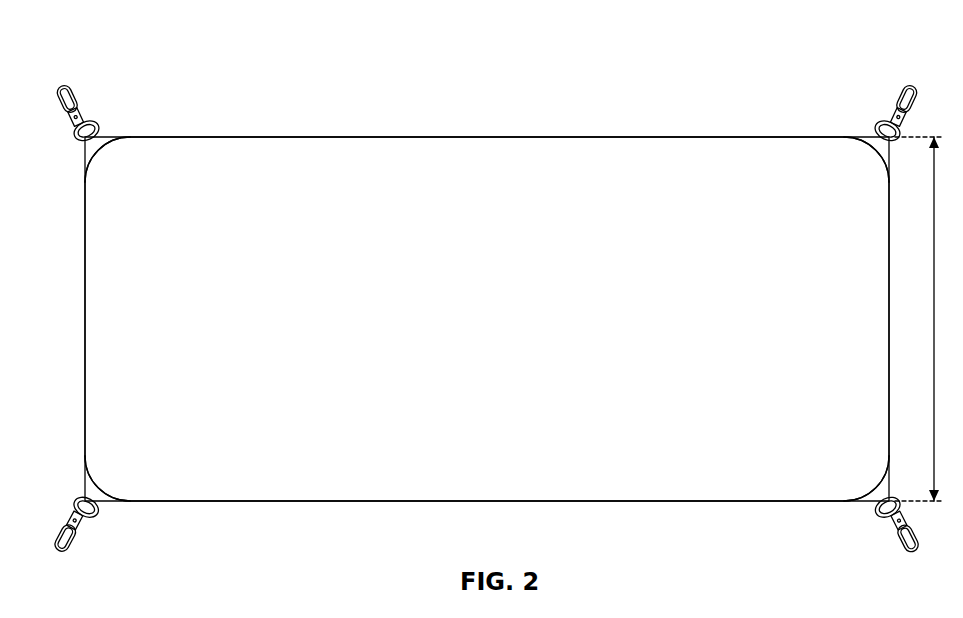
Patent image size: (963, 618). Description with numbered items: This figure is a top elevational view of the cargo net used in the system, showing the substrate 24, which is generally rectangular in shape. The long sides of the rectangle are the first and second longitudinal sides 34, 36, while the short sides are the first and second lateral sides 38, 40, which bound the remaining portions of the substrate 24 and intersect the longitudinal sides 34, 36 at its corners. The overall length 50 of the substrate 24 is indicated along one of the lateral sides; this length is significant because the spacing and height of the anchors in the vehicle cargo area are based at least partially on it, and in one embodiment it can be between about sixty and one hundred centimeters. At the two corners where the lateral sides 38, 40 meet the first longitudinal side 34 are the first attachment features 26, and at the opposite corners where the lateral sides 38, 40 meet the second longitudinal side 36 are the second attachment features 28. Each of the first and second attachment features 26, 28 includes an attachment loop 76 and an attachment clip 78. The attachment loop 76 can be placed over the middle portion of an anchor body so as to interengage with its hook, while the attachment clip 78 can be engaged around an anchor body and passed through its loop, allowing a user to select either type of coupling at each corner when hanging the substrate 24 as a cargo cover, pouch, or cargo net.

The substrate 24 is at (567, 175).
The first attachment features 26 is at (93, 522).
The second attachment features 28 is at (103, 118).
The first longitudinal side 34 is at (312, 503).
The second longitudinal side 36 is at (297, 135).
The first lateral side 38 is at (85, 335).
The second lateral side 40 is at (889, 340).
The length 50 is at (932, 255).
The attachment loop 76 is at (82, 153).
The attachment clip 78 is at (56, 103).